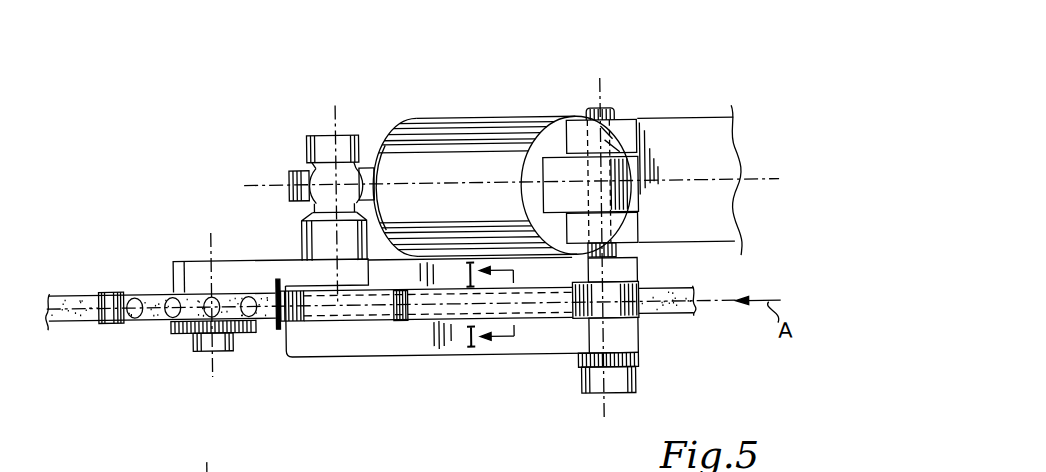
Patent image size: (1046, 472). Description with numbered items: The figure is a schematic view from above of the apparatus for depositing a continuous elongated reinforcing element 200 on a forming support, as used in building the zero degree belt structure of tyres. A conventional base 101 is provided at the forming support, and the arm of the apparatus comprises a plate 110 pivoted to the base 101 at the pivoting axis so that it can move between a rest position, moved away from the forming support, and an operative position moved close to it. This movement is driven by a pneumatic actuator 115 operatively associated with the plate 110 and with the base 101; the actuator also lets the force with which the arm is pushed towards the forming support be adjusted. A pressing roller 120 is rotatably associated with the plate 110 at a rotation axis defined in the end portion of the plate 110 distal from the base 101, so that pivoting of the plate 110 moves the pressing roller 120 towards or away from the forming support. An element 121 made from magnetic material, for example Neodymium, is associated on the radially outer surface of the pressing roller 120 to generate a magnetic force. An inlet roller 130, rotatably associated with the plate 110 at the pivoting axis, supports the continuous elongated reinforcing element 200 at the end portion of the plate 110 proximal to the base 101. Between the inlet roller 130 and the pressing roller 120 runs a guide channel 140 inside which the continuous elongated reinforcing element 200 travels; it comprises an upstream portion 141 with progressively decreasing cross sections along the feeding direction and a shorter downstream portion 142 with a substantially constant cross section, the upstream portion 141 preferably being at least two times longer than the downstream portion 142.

The base 101 is at (664, 108).
The plate 110 is at (519, 370).
The pneumatic actuator 115 is at (458, 108).
The pressing roller 120 is at (122, 333).
The element made from magnetic material 121 is at (134, 293).
The inlet roller 130 is at (642, 325).
The guide channel 140 is at (395, 335).
The upstream portion 141 is at (455, 340).
The downstream portion 142 is at (316, 335).
The continuous elongated reinforcing element 200 is at (689, 291).